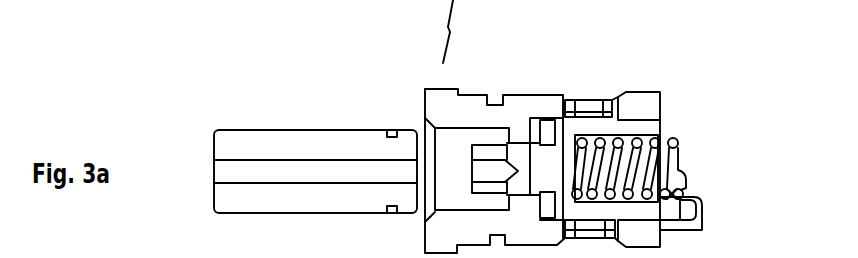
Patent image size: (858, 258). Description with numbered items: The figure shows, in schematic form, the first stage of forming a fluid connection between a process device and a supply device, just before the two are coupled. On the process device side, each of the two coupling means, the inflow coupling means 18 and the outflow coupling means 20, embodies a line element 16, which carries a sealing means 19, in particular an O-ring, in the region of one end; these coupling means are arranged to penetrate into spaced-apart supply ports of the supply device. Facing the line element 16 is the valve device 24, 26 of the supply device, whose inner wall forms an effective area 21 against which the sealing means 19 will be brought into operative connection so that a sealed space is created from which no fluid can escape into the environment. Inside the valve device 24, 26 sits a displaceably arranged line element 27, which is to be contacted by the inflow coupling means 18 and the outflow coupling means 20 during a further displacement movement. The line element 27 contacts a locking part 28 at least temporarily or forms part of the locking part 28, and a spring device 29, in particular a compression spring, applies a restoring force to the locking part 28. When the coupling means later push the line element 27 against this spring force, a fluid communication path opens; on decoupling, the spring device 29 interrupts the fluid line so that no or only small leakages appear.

The line element 16 is at (307, 109).
The inflow coupling means 18 is at (302, 110).
The outflow coupling means 20 is at (300, 137).
The sealing means 19 is at (392, 129).
The effective area 21 is at (455, 127).
The valve device 24 is at (557, 116).
The valve device 26 is at (518, 115).
The displaceably arranged line element 27 is at (515, 157).
The locking part 28 is at (592, 129).
The spring device 29 is at (677, 165).